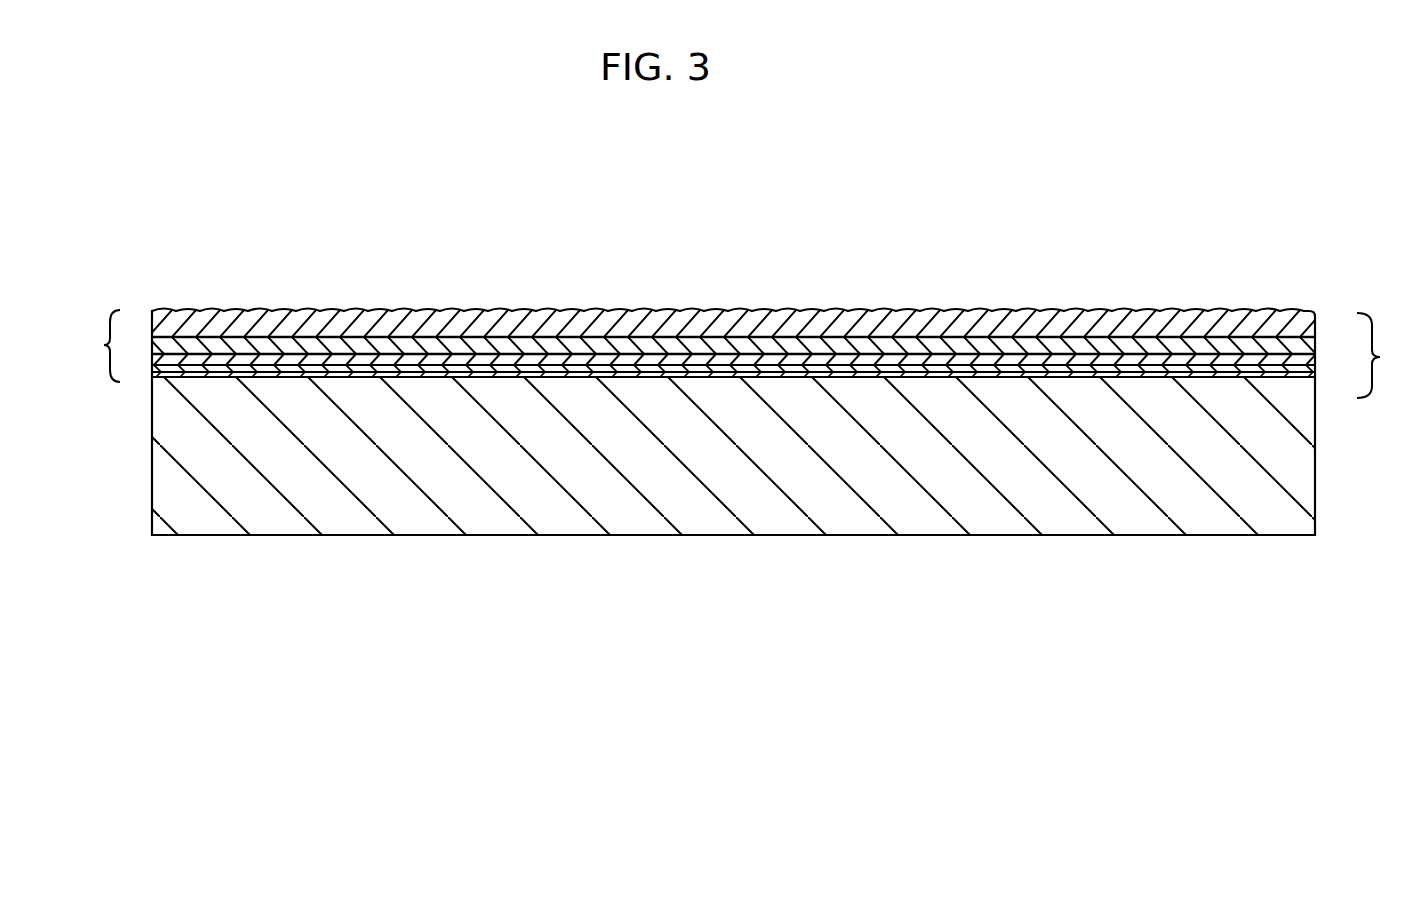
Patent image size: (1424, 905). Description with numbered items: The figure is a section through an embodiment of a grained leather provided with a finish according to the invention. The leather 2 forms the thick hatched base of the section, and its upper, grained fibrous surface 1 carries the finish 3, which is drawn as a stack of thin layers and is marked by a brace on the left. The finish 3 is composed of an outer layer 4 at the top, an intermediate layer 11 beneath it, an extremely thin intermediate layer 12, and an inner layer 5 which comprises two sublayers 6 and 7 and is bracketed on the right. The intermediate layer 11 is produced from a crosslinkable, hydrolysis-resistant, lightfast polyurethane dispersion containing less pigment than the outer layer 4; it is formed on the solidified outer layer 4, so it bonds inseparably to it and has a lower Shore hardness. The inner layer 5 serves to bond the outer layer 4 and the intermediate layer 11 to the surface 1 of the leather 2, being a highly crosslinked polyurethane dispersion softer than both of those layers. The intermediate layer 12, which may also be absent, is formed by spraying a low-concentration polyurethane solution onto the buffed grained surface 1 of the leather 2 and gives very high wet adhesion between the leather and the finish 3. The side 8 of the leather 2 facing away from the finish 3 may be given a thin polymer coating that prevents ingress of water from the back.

The fibrous surface 1 is at (953, 375).
The leather 2 is at (255, 432).
The finish 3 is at (102, 346).
The outer layer 4 is at (312, 330).
The inner layer 5 is at (1131, 311).
The sublayer 6 is at (1315, 355).
The sublayer 7 is at (1315, 363).
The side of the leather facing away from the finish 8 is at (505, 535).
The intermediate layer 11 is at (595, 347).
The extremely thin intermediate layer 12 is at (733, 296).